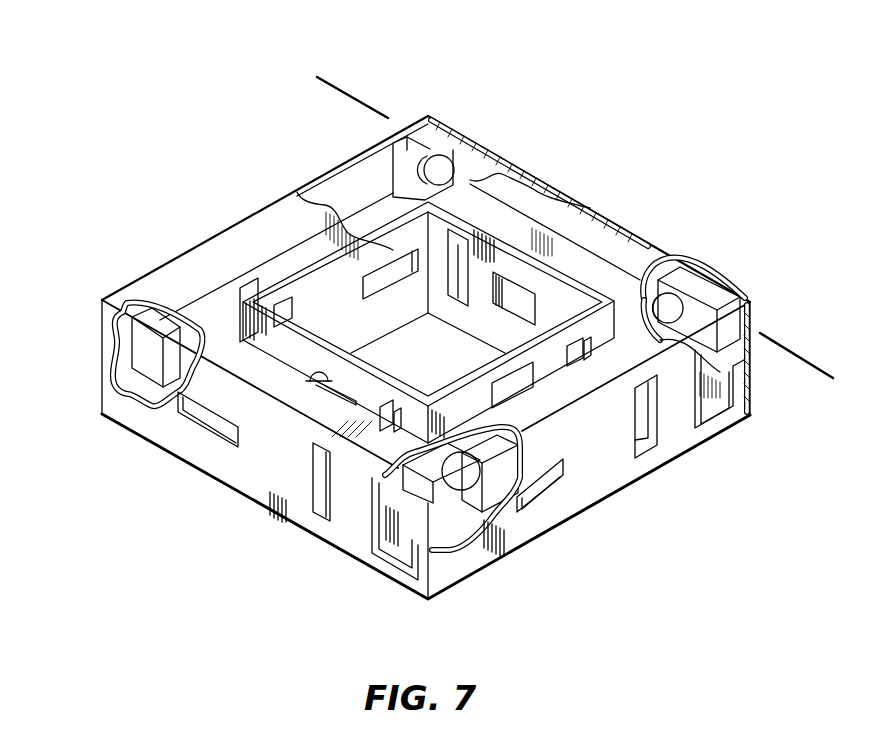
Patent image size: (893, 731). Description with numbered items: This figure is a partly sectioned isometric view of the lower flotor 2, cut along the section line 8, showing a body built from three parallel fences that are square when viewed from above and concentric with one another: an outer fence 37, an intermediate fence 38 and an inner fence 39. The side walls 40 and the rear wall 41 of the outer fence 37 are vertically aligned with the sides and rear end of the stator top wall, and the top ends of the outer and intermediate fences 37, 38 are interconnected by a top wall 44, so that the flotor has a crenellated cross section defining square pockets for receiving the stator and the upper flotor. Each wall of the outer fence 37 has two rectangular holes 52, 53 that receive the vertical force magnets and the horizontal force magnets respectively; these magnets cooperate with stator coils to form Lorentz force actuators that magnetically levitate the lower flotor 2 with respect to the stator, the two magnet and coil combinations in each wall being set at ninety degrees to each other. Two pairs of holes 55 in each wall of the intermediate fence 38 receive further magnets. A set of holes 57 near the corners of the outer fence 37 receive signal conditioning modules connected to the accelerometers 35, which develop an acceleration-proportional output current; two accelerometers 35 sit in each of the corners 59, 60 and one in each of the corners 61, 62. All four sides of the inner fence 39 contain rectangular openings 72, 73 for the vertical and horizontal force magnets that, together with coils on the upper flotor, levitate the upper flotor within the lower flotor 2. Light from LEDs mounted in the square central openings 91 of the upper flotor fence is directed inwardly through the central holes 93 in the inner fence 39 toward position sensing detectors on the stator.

The lower flotor 2 is at (652, 148).
The section line 8- 8 is at (314, 109).
The accelerometers 35 is at (436, 148).
The outer fence 37 is at (102, 384).
The intermediate fence 38 is at (622, 265).
The inner fence 39 is at (292, 253).
The side walls 40 is at (254, 455).
The rear wall 41 is at (598, 495).
The top wall 44 is at (240, 271).
The rectangular holes 52 is at (318, 520).
The rectangular holes 53 is at (220, 437).
The holes 55 is at (498, 202).
The holes 57 is at (390, 567).
The corner 59 is at (428, 116).
The corner 60 is at (426, 600).
The corner 61 is at (102, 320).
The corner 62 is at (755, 327).
The rectangular openings 72 is at (292, 318).
The rectangular openings 73 is at (400, 290).
The square central openings 91 is at (310, 375).
The central holes 93 is at (505, 332).